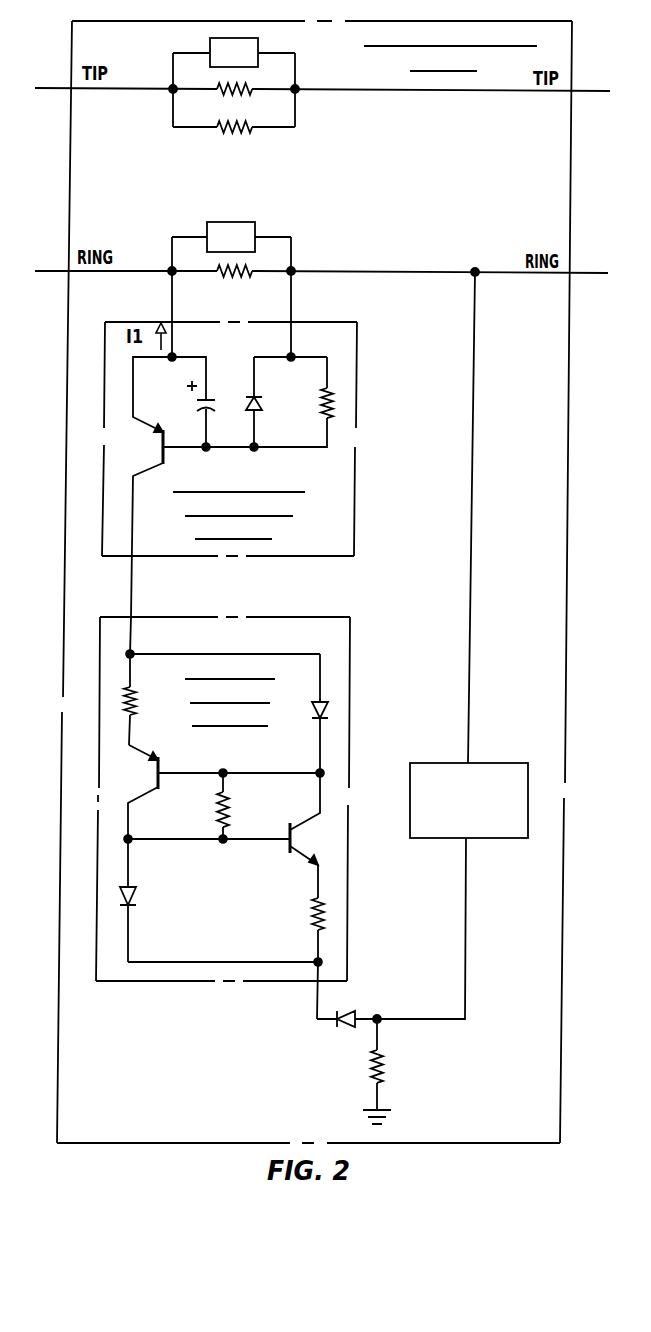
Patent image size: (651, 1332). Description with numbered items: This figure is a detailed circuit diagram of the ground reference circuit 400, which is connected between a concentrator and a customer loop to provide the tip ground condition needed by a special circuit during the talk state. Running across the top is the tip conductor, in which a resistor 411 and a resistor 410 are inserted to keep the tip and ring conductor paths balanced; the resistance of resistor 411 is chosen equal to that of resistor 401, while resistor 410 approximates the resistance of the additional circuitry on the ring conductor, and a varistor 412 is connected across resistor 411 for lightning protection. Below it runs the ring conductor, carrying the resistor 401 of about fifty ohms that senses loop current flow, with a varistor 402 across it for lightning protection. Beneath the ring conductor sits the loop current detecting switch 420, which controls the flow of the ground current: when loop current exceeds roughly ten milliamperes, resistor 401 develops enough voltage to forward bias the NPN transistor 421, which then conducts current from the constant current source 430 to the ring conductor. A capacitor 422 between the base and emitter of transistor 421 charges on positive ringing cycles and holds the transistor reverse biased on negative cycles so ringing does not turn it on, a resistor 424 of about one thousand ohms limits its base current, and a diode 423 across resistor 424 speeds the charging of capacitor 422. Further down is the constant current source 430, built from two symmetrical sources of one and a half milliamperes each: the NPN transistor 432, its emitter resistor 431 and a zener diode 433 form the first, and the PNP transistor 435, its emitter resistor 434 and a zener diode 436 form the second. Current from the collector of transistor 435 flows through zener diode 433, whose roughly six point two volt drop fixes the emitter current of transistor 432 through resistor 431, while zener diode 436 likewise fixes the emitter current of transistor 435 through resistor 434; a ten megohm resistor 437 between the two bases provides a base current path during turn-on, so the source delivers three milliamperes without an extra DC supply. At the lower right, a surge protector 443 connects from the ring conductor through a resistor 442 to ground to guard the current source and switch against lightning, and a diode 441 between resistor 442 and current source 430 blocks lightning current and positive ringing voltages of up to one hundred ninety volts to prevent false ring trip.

The ground reference circuit 400 is at (519, 21).
The resistor 401 is at (230, 278).
The varistor 402 is at (249, 222).
The resistor 410 is at (235, 135).
The resistor 411 is at (238, 95).
The varistor 412 is at (255, 55).
The loop current detecting switch 420 is at (331, 320).
The NPN transistor 421 is at (159, 451).
The capacitor 422 is at (188, 407).
The diode 423 is at (266, 406).
The resistor 424 is at (314, 398).
The constant current source 430 is at (324, 618).
The emitter resistor 431 is at (142, 703).
The NPN transistor 432 is at (156, 778).
The zener diode 433 is at (304, 746).
The emitter resistor 434 is at (302, 916).
The PNP transistor 435 is at (287, 832).
The zener diode 436 is at (148, 906).
The resistor 437 is at (210, 810).
The diode 441 is at (342, 1036).
The resistor 442 is at (391, 1068).
The surge protector 443 is at (518, 763).